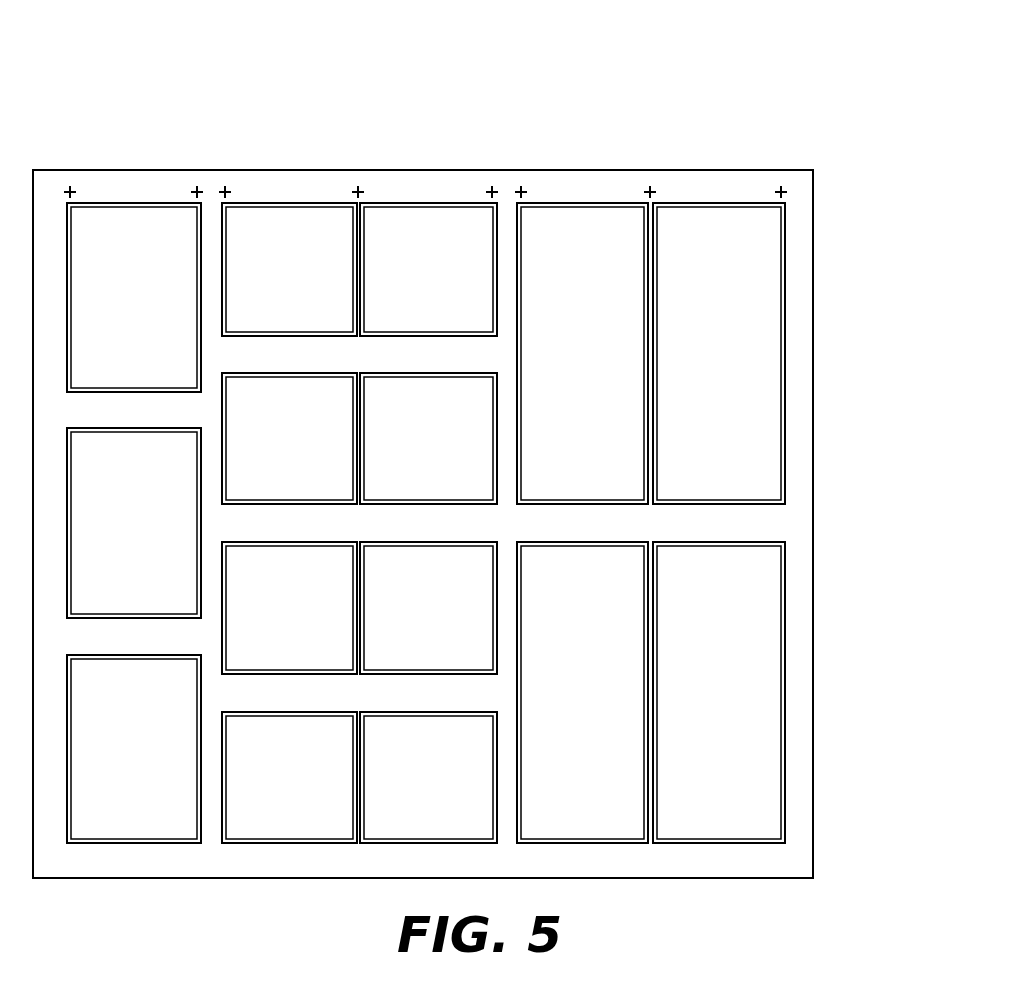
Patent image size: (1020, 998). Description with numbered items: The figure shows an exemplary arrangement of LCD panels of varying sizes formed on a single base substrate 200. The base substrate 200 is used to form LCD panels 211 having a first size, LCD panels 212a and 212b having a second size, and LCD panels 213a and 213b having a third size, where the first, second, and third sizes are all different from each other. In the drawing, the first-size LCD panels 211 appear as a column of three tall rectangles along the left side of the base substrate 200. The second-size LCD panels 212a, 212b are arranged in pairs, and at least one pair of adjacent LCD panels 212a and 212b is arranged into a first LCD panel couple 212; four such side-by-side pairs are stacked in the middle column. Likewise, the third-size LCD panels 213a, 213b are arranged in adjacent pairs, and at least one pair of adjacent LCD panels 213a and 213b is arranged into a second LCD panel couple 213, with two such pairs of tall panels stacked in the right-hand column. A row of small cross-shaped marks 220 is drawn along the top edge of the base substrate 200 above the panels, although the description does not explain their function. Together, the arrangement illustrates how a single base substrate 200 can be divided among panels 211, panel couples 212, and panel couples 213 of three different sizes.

The base substrate 200 is at (818, 258).
The LCD panels having a first size 211 is at (134, 203).
The first LCD panel couple 212 is at (359, 440).
The LCD panel having a second size 212a is at (292, 203).
The LCD panel having a second size 212b is at (428, 470).
The second LCD panel couple 213 is at (651, 452).
The LCD panel having a third size 213a is at (583, 203).
The LCD panel having a third size 213b is at (719, 470).
The alignment marks 220 is at (492, 186).